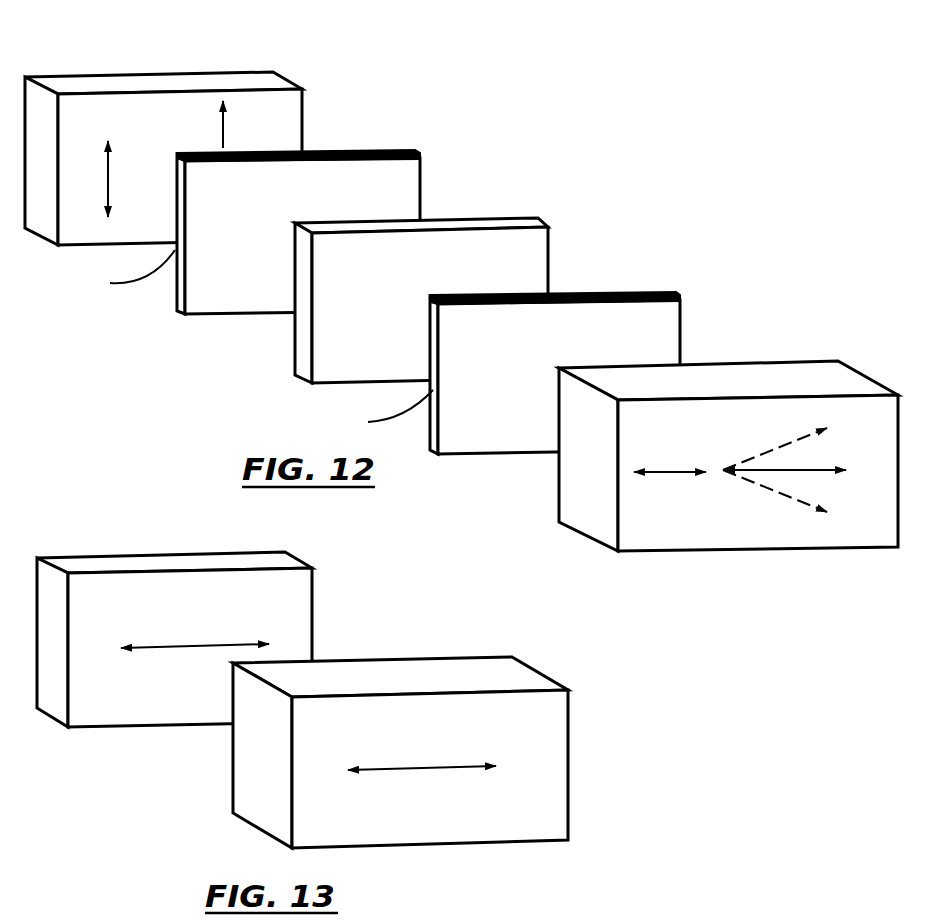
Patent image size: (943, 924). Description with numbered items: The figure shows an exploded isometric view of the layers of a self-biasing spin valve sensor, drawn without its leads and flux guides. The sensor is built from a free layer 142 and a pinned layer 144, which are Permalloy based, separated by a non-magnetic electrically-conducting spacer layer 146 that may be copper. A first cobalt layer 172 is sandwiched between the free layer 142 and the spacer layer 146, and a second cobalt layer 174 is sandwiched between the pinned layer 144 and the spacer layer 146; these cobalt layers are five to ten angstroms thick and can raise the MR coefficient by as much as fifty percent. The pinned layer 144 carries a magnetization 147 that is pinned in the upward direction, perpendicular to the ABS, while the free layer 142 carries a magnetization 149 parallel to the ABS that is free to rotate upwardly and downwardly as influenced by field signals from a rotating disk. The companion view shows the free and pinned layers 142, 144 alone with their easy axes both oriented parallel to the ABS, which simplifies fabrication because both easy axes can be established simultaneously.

In FIG. 12, the free layer 142 is at (765, 368).
In FIG. 13, the free layer 142 is at (425, 672).
In FIG. 12, the pinned layer 144 is at (197, 72).
In FIG. 13, the pinned layer 144 is at (205, 562).
In FIG. 12, the spacer layer 146 is at (472, 218).
In FIG. 12, the magnetization 147 is at (225, 135).
In FIG. 12, the magnetization 149 is at (802, 467).
In FIG. 12, the first cobalt layer 172 is at (588, 292).
In FIG. 12, the second cobalt layer 174 is at (348, 152).